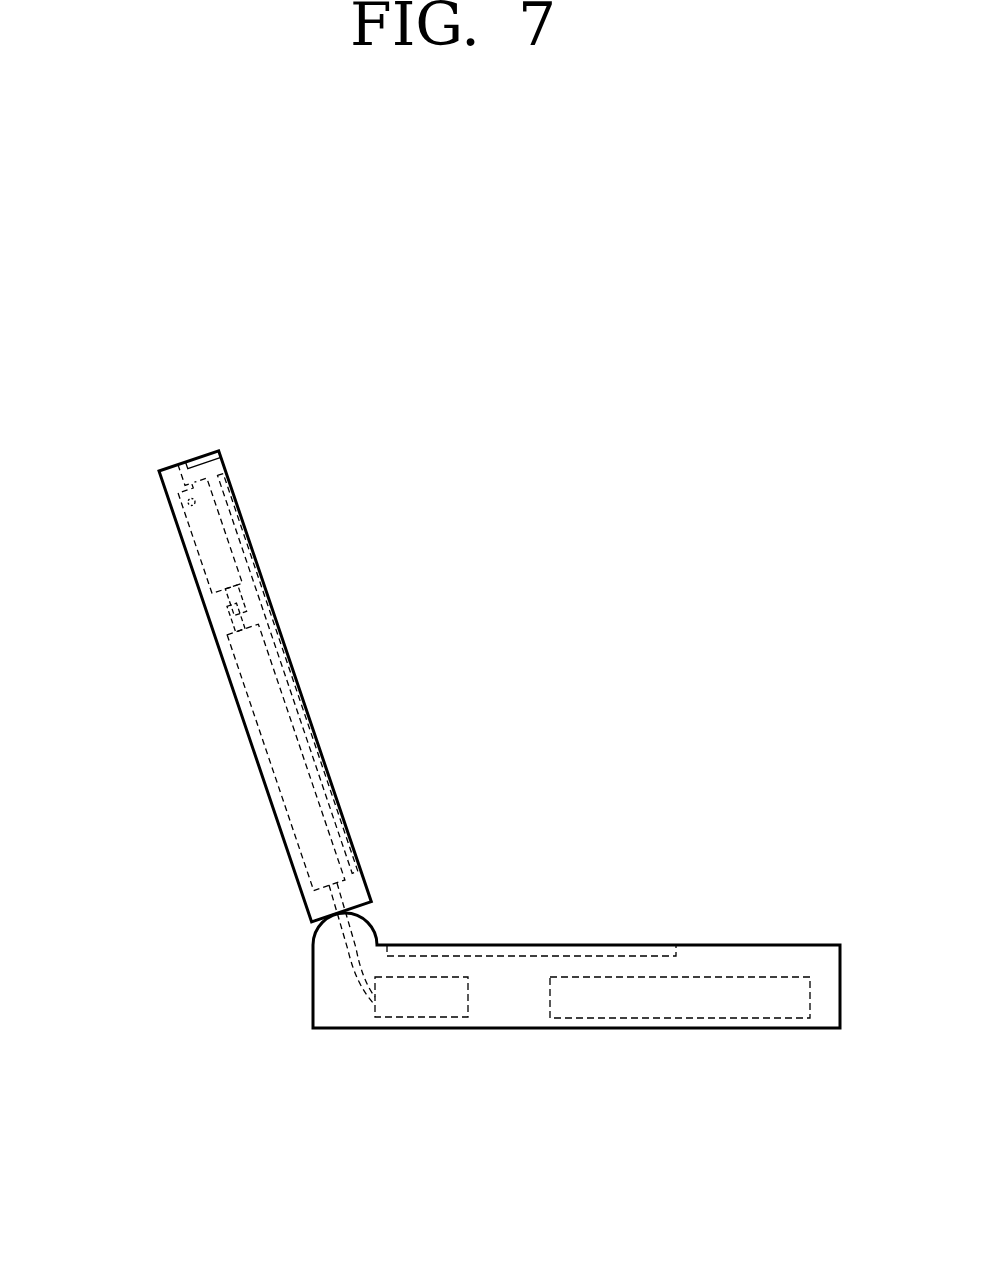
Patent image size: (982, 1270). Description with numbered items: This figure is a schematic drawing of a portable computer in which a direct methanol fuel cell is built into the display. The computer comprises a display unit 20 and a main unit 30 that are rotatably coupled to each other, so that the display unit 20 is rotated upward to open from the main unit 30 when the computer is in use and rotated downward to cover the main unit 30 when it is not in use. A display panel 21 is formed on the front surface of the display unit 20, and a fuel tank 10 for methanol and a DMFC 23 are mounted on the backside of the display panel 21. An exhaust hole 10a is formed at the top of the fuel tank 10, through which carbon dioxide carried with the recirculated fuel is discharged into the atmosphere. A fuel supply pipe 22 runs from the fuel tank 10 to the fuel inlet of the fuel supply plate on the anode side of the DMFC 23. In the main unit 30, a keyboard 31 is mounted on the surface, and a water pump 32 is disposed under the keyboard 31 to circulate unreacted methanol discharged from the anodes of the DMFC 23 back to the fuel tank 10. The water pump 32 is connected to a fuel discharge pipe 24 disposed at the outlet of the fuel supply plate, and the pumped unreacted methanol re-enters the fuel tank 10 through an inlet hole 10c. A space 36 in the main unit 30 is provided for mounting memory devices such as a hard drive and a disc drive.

The fuel tank 10 is at (220, 557).
The exhaust hole 10a is at (207, 462).
The inlet hole 10c is at (188, 500).
The display unit 20 is at (187, 597).
The display panel 21 is at (280, 608).
The fuel supply pipe 22 is at (236, 612).
The DMFC 23 is at (290, 777).
The fuel discharge pipe 24 is at (336, 956).
The main unit 30 is at (772, 936).
The keyboard 31 is at (530, 947).
The water pump 32 is at (422, 1000).
The space for mounting memory devices 36 is at (692, 997).